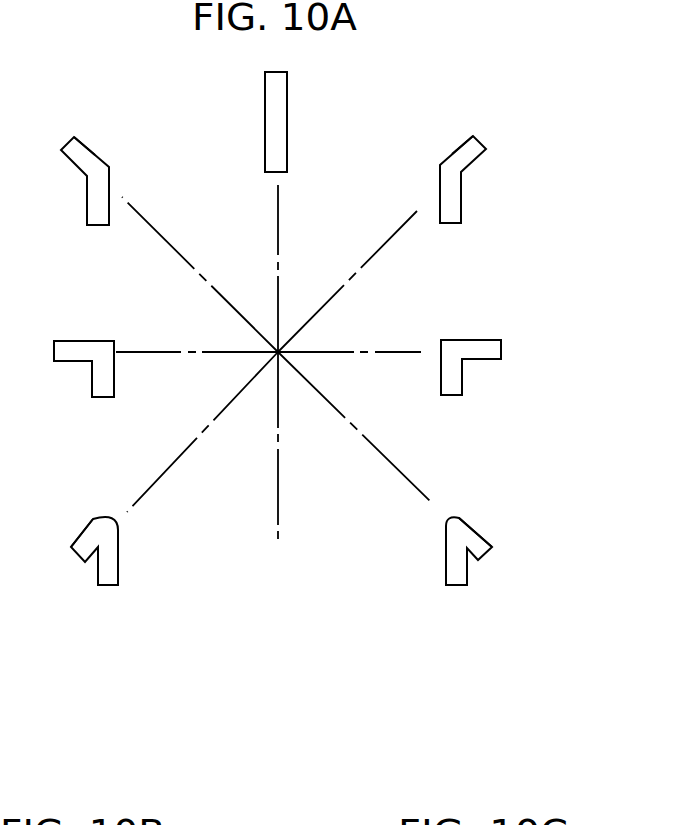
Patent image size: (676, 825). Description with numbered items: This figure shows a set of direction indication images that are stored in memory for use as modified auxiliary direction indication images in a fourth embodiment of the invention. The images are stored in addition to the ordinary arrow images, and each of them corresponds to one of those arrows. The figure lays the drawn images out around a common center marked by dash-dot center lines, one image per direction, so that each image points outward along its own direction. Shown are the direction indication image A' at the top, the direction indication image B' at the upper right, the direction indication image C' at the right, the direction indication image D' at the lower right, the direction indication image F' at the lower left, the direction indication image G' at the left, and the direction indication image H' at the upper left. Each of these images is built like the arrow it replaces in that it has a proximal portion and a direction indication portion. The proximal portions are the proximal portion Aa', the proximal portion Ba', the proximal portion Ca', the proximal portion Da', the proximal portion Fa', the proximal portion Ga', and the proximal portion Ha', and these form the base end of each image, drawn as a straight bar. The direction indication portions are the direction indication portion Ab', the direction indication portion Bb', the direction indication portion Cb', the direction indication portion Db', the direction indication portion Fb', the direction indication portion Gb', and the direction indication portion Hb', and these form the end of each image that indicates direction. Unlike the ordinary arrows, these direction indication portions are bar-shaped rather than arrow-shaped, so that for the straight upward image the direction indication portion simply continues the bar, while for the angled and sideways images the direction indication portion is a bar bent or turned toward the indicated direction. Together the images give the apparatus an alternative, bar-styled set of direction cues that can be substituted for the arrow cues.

The direction indication image A' is at (310, 119).
The proximal portion Aa' is at (328, 146).
The direction indication portion Ab' is at (232, 97).
The direction indication image B' is at (491, 178).
The proximal portion Ba' is at (498, 201).
The direction indication portion Bb' is at (431, 133).
The direction indication image C' is at (510, 359).
The proximal portion Ca' is at (495, 396).
The direction indication portion Cb' is at (461, 311).
The direction indication image D' is at (505, 547).
The proximal portion Da' is at (500, 589).
The direction indication portion Db' is at (494, 501).
The direction indication image F' is at (130, 551).
The proximal portion Fa' is at (142, 595).
The direction indication portion Fb' is at (68, 508).
The direction indication image G' is at (115, 342).
The proximal portion Ga' is at (140, 404).
The direction indication portion Gb' is at (77, 312).
The direction indication image H' is at (120, 181).
The proximal portion Ha' is at (124, 251).
The direction indication portion Hb' is at (113, 141).